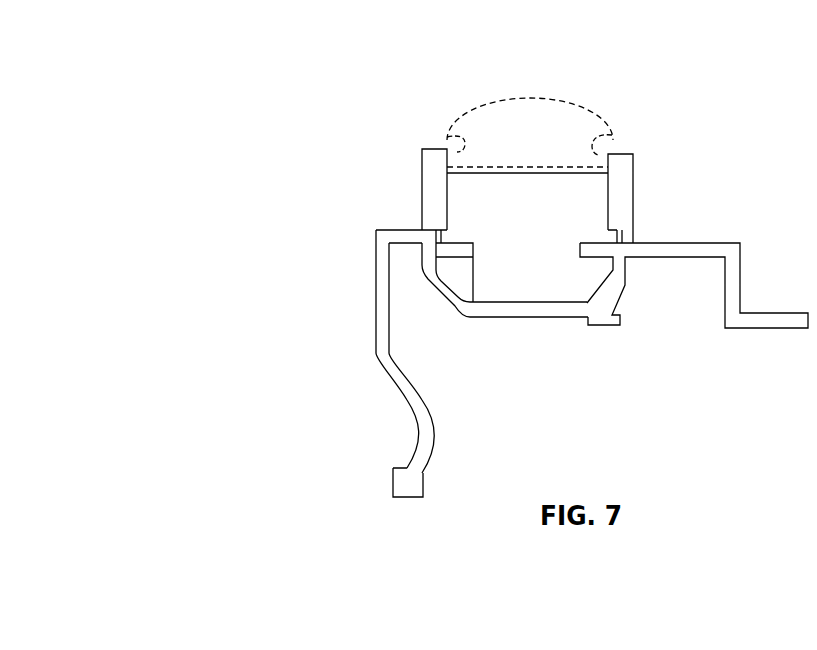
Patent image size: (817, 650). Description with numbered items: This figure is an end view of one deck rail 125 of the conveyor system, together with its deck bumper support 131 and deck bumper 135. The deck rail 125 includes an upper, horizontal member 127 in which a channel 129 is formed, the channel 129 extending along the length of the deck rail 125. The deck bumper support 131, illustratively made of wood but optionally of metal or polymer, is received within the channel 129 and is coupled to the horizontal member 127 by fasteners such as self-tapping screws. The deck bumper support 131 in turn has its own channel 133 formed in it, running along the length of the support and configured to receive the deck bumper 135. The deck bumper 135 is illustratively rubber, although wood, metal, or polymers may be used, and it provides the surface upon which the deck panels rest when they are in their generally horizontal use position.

The deck rail 125 is at (385, 352).
The horizontal member 127 is at (670, 258).
The channel 129 is at (455, 293).
The deck bumper support 131 is at (445, 210).
The channel 133 is at (465, 112).
The deck bumper 135 is at (517, 110).